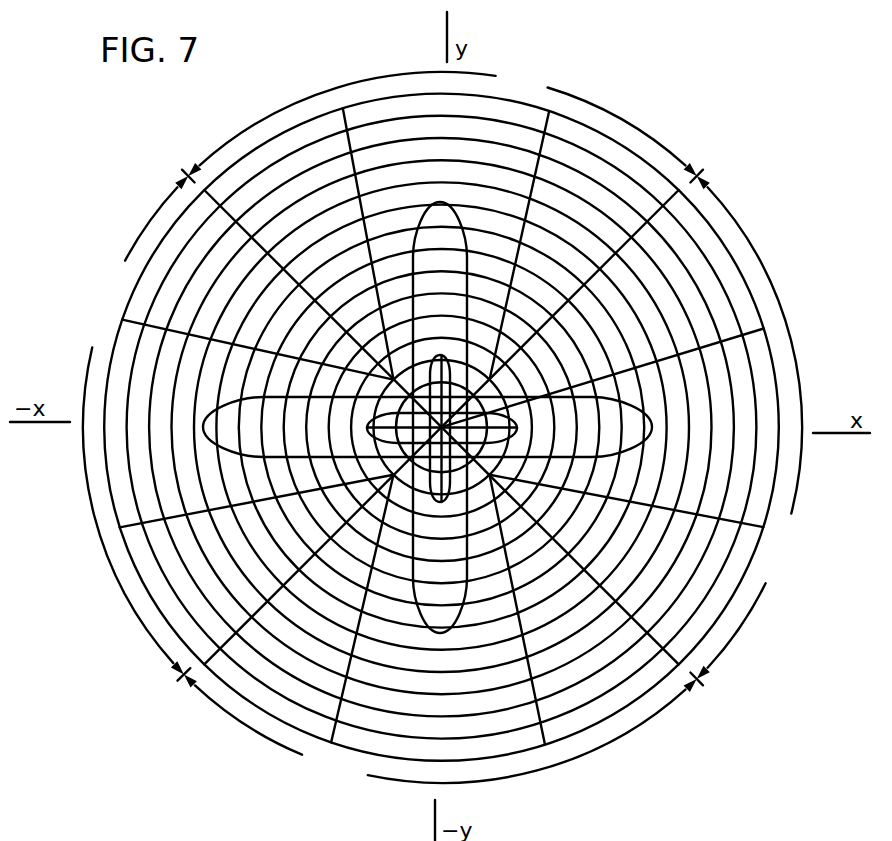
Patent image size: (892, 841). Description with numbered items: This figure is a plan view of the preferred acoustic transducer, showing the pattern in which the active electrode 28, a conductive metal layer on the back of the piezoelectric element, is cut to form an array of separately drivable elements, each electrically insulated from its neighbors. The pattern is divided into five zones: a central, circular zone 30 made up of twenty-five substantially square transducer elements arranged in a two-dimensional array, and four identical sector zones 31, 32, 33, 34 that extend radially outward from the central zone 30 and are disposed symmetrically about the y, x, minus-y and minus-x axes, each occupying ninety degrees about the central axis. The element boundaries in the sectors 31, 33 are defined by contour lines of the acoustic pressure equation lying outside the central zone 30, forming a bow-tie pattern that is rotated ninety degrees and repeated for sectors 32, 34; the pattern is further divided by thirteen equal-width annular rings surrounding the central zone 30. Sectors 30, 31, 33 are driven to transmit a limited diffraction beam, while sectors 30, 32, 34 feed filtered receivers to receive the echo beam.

The active electrode 28 is at (586, 724).
The central circular zone 30 is at (490, 380).
The sector zone 31 is at (442, 126).
The sector zone 32 is at (750, 427).
The sector zone 33 is at (441, 727).
The sector zone 34 is at (135, 425).